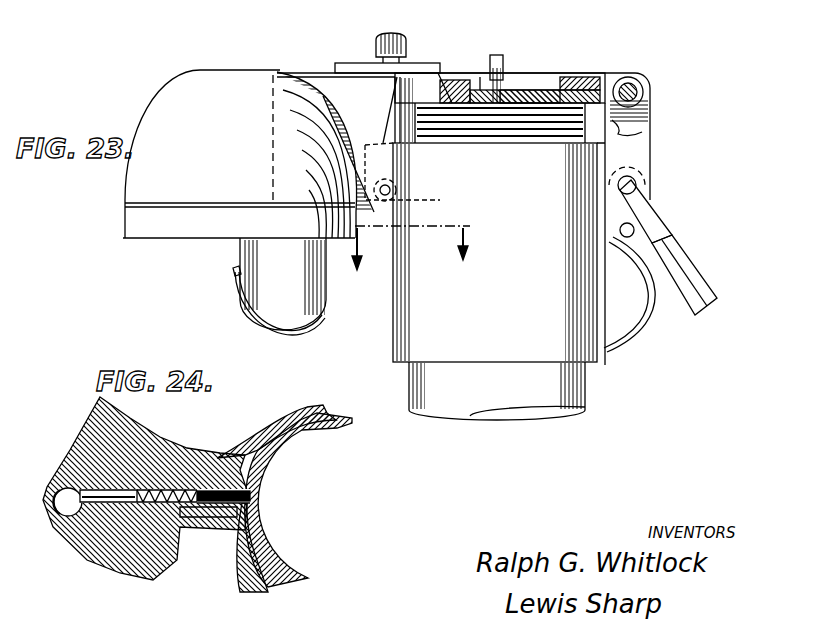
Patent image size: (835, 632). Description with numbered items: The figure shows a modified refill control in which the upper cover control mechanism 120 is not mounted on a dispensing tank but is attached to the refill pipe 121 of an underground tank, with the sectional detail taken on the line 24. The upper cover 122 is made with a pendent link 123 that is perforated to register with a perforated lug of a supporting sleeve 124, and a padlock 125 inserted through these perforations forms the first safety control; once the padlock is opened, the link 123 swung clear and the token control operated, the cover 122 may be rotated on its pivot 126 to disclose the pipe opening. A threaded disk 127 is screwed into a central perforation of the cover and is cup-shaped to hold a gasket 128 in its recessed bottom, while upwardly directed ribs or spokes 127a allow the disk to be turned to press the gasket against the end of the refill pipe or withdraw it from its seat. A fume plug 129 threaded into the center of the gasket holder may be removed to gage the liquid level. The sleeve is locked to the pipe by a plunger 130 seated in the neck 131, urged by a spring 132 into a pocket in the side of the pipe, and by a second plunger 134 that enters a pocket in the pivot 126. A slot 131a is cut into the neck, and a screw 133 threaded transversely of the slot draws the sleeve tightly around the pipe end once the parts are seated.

In FIG. 23, the upper cover control mechanism 120 is at (176, 104).
In FIG. 23, the refill pipe 121 is at (585, 392).
In FIG. 24, the refill pipe 121 is at (344, 436).
In FIG. 23, the upper cover 122 is at (598, 76).
In FIG. 23, the pendent link 123 is at (642, 133).
In FIG. 23, the supporting sleeve 124 is at (422, 328).
In FIG. 24, the supporting sleeve 124 is at (312, 412).
In FIG. 23, the padlock 125 is at (683, 247).
In FIG. 23, the pivot 126 is at (279, 286).
In FIG. 24, the pivot 126 is at (66, 483).
In FIG. 23, the threaded disk 127 is at (541, 86).
In FIG. 23, the ribs or spokes 127a is at (523, 77).
In FIG. 23, the gasket 128 is at (560, 85).
In FIG. 23, the fume plug 129 is at (496, 56).
In FIG. 24, the plunger 130 is at (233, 510).
In FIG. 23, the neck 131 is at (378, 240).
In FIG. 24, the neck 131 is at (217, 460).
In FIG. 24, the slot 131a is at (192, 518).
In FIG. 24, the spring 132 is at (143, 565).
In FIG. 23, the screw 133 is at (400, 190).
In FIG. 24, the second plunger 134 is at (88, 560).
In FIG. 23, the section line 24- 24 is at (422, 250).